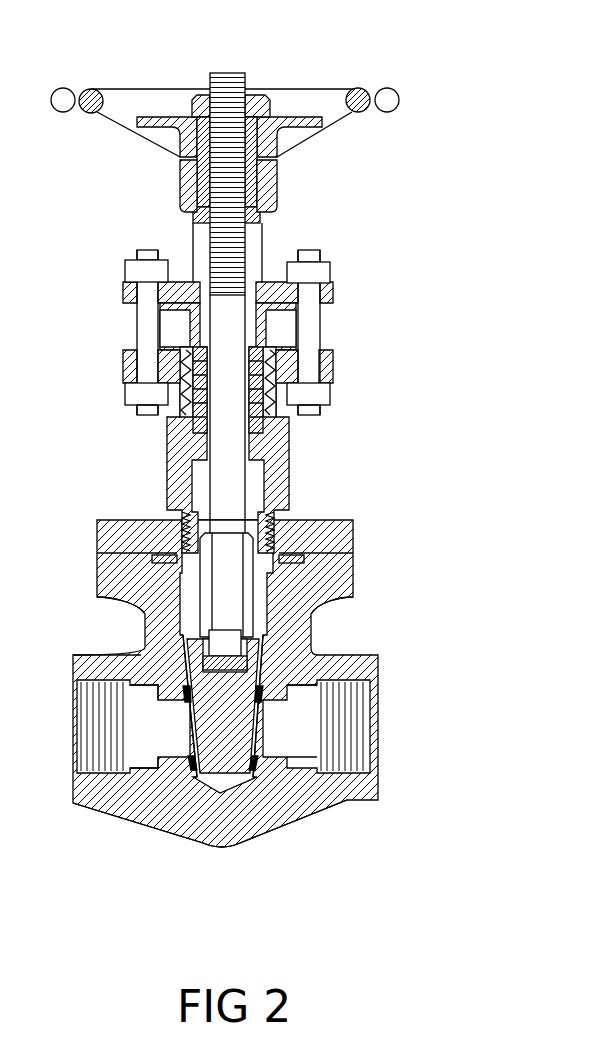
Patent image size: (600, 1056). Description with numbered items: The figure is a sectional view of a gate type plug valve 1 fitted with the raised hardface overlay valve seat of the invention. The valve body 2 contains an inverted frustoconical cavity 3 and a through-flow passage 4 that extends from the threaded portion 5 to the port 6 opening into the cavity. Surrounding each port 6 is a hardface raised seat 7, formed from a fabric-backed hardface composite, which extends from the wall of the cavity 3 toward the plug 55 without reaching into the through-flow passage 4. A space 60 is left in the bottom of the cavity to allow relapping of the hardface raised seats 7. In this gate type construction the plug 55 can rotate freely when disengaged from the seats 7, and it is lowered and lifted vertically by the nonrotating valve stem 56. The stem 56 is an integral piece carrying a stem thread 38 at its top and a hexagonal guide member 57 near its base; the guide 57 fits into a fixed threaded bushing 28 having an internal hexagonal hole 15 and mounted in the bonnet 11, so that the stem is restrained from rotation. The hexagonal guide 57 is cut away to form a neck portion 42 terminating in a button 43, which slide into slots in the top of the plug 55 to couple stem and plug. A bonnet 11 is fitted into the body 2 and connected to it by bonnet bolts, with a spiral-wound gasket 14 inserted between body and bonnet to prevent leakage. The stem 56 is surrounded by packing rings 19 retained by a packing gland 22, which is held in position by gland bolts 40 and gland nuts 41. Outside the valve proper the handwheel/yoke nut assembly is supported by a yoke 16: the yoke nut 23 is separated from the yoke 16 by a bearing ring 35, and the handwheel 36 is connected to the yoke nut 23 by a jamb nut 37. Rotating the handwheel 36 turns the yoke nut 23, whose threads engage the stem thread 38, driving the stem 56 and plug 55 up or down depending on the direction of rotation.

The valve 1 is at (273, 442).
The body 2 is at (307, 803).
The cavity 3 is at (140, 652).
The through-flow passage 4 is at (156, 751).
The threaded portion 5 is at (97, 740).
The port 6 is at (265, 728).
The hardface raised seat 7 is at (265, 686).
The bonnet 11 is at (117, 540).
The spiral-wound gasket 14 is at (330, 556).
The internal hexagonal hole 15 is at (253, 512).
The yoke 16 is at (276, 184).
The packing rings 19 is at (255, 415).
The packing gland 22 is at (331, 292).
The yoke nut 23 is at (265, 205).
The threaded bushing 28 is at (282, 540).
The bearing ring 35 is at (197, 203).
The handwheel 36 is at (288, 118).
The jamb nut 37 is at (193, 100).
The stem thread 38 is at (238, 72).
The gland bolts 40 is at (147, 340).
The gland nuts 41 is at (132, 273).
The neck portion 42 is at (147, 613).
The button 43 is at (310, 613).
The plug 55 is at (241, 727).
The valve stem 56 is at (182, 428).
The hexagonal guide member 57 is at (178, 522).
The space 60 is at (233, 778).